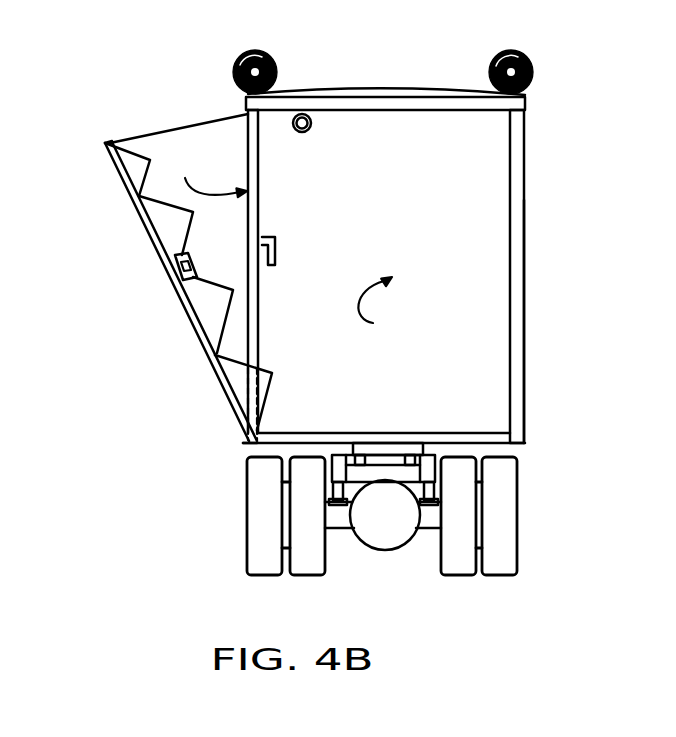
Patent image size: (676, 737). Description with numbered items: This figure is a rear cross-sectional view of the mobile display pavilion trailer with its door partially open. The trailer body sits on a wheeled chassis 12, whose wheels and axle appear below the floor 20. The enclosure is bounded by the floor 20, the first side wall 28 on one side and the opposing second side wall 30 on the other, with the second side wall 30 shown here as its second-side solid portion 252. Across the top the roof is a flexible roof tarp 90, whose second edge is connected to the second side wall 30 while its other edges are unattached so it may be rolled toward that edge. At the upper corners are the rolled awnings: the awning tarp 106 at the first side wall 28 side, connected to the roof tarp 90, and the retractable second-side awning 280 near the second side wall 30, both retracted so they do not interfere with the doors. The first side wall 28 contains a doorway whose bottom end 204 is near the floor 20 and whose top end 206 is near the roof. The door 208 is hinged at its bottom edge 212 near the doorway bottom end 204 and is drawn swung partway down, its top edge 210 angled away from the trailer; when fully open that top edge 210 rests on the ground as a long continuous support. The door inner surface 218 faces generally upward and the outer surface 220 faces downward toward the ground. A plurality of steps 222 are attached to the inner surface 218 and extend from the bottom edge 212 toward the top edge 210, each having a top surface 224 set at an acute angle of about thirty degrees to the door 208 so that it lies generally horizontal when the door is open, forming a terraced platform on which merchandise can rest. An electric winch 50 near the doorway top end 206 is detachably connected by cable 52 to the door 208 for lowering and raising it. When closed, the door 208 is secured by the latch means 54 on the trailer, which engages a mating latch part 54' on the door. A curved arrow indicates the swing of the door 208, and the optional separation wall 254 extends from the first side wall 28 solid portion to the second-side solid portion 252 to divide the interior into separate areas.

The wheeled chassis 12 is at (240, 515).
The floor 20 is at (404, 435).
The first side wall 28 is at (216, 178).
The second side wall 30 is at (528, 250).
The electric winch 50 is at (337, 130).
The cable 52 is at (230, 117).
The latch means 54 is at (303, 237).
The latch bracket 54' is at (155, 298).
The roof tarp 90 is at (395, 93).
The awning tarp 106 is at (255, 50).
The bottom end of the doorway 204 is at (270, 416).
The top end of the doorway 206 is at (240, 143).
The door 208 is at (152, 263).
The door top edge 210 is at (109, 141).
The door bottom edge 212 is at (250, 442).
The door inner surface 218 is at (133, 172).
The door outer surface 220 is at (117, 172).
The steps 222 is at (166, 223).
The step top surface 224 is at (196, 226).
The second-side solid portion 252 is at (525, 316).
The separation wall 254 is at (396, 306).
The second-side awning 280 is at (530, 46).